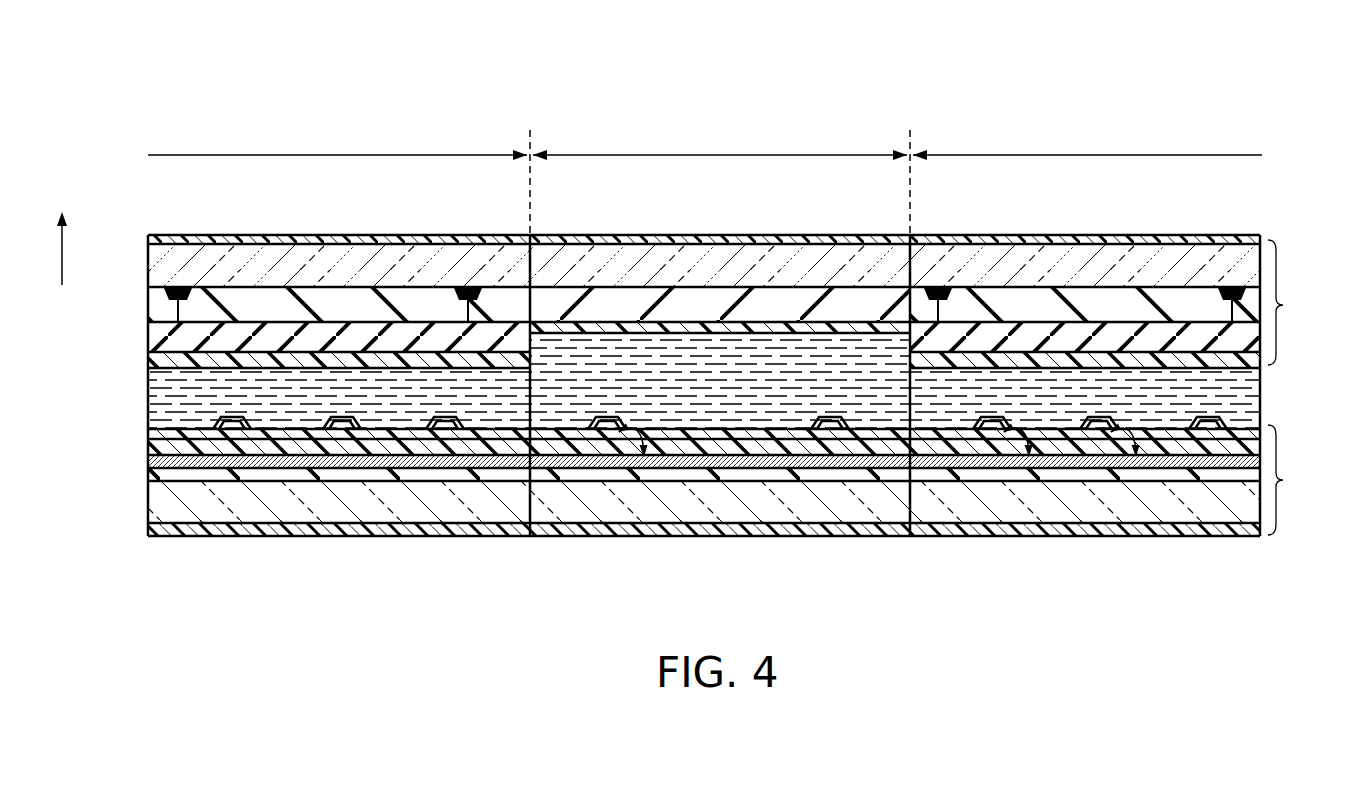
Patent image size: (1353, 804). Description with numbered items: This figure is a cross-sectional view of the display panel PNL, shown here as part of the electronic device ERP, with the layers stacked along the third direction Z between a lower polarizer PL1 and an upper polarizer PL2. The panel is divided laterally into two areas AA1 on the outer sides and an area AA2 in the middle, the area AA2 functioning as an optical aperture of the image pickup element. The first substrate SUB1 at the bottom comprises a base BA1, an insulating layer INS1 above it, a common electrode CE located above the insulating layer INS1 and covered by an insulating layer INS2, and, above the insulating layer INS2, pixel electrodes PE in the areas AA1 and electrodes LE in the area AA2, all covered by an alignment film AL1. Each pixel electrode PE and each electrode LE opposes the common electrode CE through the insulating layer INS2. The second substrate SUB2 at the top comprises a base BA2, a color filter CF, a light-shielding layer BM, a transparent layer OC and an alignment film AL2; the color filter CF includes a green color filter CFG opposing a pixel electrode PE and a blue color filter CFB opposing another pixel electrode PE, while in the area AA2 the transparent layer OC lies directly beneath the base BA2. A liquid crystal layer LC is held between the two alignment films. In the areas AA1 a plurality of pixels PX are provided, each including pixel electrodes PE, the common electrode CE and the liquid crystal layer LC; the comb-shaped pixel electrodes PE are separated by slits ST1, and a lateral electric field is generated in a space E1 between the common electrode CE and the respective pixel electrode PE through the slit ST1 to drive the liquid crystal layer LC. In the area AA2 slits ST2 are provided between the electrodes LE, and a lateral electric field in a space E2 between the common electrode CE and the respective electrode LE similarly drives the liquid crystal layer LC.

The polarizer PL2 is at (150, 240).
The base BA2 is at (150, 265).
The light-shielding layer BM is at (168, 296).
The transparent layer OC is at (150, 337).
The alignment film AL2 is at (150, 360).
The liquid crystal layer LC is at (150, 392).
The alignment film AL1 is at (150, 434).
The insulating layer INS2 is at (150, 447).
The common electrode CE is at (150, 461).
The insulating layer INS1 is at (150, 475).
The base BA1 is at (150, 500).
The polarizer PL1 is at (190, 538).
The color filter CF is at (704, 244).
The green color filter CFG is at (312, 300).
The blue color filter CFB is at (492, 300).
The pixel electrode PE is at (341, 430).
The electrode LE is at (607, 430).
The pixel PX is at (352, 482).
The slit ST1 is at (384, 416).
The slit ST2 is at (706, 414).
The space E1 is at (1024, 422).
The space E2 is at (645, 424).
The area AA1 is at (705, 143).
The area AA2 is at (720, 143).
The first substrate SUB1 is at (1307, 480).
The second substrate SUB2 is at (1307, 302).
The electronic apparatus / display panel region ERP is at (592, 78).
The display panel PNL is at (717, 91).
The third direction Z is at (59, 236).